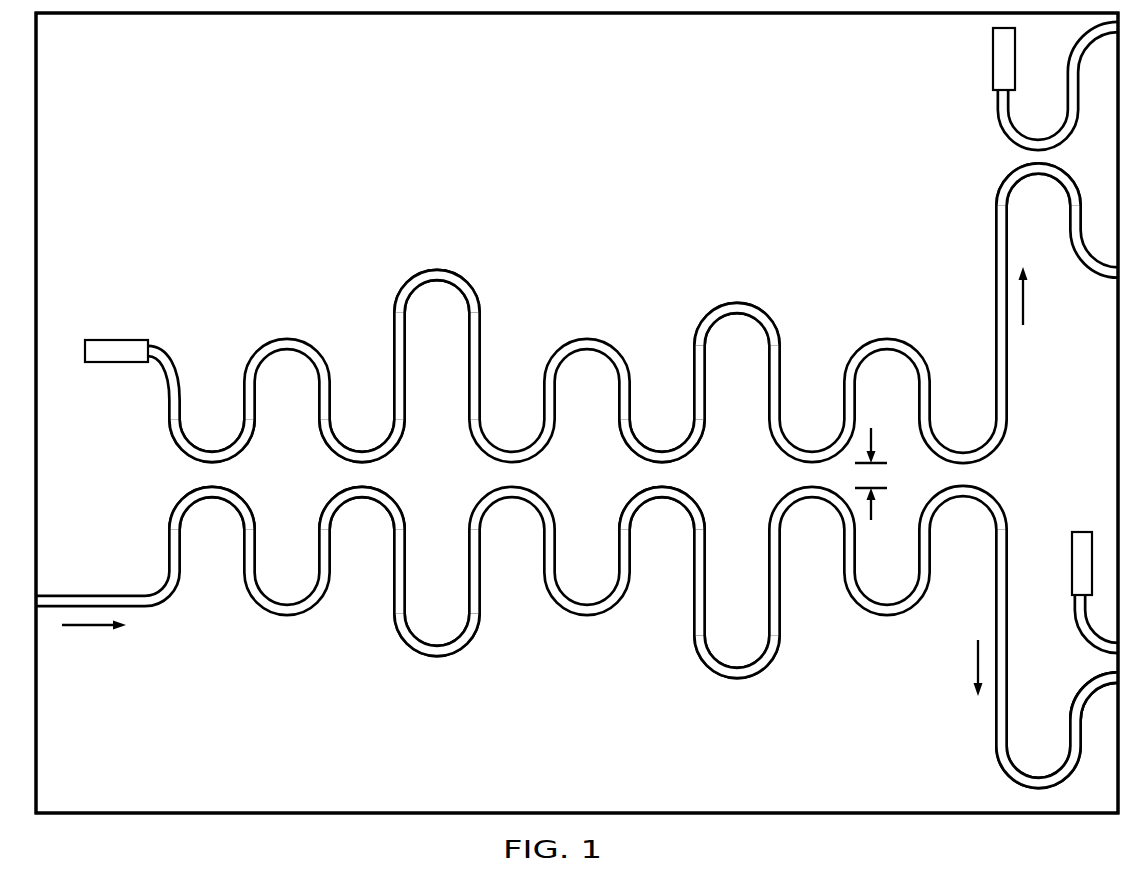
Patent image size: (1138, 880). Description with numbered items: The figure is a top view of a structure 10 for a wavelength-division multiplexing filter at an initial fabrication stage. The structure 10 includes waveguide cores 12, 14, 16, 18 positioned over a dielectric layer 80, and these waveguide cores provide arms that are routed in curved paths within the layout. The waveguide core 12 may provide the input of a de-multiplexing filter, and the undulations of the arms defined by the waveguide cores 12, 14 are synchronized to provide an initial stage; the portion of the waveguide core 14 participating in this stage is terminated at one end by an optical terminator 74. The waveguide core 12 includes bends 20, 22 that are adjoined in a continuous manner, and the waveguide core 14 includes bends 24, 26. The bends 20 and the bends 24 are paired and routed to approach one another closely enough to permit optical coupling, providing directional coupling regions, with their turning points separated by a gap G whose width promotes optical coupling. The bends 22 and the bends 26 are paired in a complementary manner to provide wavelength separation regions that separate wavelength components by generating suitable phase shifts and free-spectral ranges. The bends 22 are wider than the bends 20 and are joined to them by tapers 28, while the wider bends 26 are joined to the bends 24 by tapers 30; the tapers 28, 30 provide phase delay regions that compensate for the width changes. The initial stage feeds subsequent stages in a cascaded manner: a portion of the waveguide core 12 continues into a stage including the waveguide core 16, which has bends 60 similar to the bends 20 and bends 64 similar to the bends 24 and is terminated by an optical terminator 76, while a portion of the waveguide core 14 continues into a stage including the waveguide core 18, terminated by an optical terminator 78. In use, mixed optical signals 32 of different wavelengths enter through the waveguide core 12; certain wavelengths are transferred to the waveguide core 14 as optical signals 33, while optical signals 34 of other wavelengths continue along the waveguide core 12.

The structure 10 is at (148, 90).
The waveguide core 12 is at (311, 685).
The waveguide core 14 is at (343, 264).
The waveguide core 16 is at (1033, 609).
The waveguide core 18 is at (987, 97).
The bends 20 is at (200, 494).
The bends 22 is at (193, 447).
The bends 24 is at (367, 458).
The bends 26 is at (407, 315).
The tapers 28 is at (470, 578).
The tapers 30 is at (473, 382).
The mixed optical signals 32 is at (80, 627).
The optical signals 33 is at (1027, 297).
The optical signals 34 is at (975, 672).
The bends 60 is at (1100, 645).
The bends 64 is at (1008, 122).
The optical terminator 74 is at (110, 348).
The optical terminator 76 is at (1080, 572).
The optical terminator 78 is at (1003, 73).
The dielectric layer 80 is at (113, 790).
The gap G is at (882, 474).